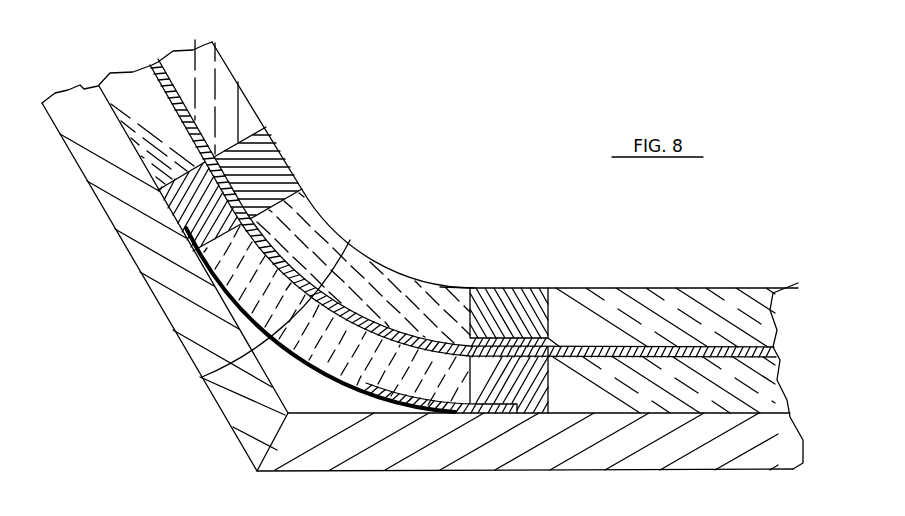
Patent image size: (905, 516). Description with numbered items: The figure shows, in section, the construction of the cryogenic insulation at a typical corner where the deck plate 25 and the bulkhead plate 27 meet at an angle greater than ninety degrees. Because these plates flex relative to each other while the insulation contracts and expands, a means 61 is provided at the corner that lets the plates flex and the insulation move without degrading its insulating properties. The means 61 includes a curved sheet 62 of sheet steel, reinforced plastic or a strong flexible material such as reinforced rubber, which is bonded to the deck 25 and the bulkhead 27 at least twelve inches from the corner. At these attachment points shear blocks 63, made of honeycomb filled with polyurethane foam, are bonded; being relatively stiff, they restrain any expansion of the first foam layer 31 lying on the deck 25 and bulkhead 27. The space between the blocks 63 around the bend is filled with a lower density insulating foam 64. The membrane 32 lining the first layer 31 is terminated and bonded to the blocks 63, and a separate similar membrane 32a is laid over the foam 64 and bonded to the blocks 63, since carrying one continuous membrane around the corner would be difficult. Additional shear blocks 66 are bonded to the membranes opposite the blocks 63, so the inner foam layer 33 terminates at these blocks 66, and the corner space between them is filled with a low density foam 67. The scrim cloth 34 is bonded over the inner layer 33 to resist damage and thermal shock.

The deck plate 25 is at (733, 450).
The bulkhead plate 27 is at (175, 310).
The first layer of insulation foam 31 is at (752, 392).
The membrane 32 is at (152, 64).
The membrane (corner membrane) 32a is at (350, 240).
The second or inner layer of insulation foam 33 is at (205, 108).
The scrim cloth 34 is at (396, 280).
The means for inhibiting foam cracking at a corner 61 is at (427, 149).
The curved sheet 62 is at (200, 377).
The shear blocks 63 is at (172, 203).
The foam (corner foam) 64 is at (407, 388).
The additional shear blocks 66 is at (262, 166).
The low density foam 67 is at (444, 287).